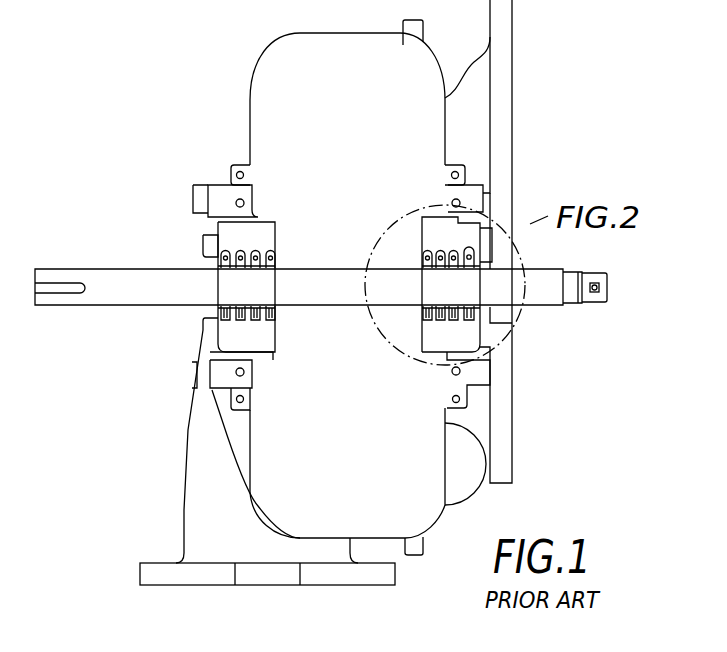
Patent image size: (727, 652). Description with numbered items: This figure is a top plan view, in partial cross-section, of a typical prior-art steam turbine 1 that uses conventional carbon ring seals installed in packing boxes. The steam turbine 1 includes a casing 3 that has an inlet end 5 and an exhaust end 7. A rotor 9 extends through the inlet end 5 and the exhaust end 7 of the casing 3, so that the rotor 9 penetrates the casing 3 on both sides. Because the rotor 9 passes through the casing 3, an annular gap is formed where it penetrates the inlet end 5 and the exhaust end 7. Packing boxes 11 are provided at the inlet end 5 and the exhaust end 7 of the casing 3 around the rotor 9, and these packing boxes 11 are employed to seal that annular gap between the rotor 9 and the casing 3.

The steam turbine 1 is at (533, 97).
The casing 3 is at (250, 96).
The inlet end 5 is at (422, 264).
The exhaust end 7 is at (276, 262).
The rotor 9 is at (543, 298).
The packing boxes 11 is at (212, 233).